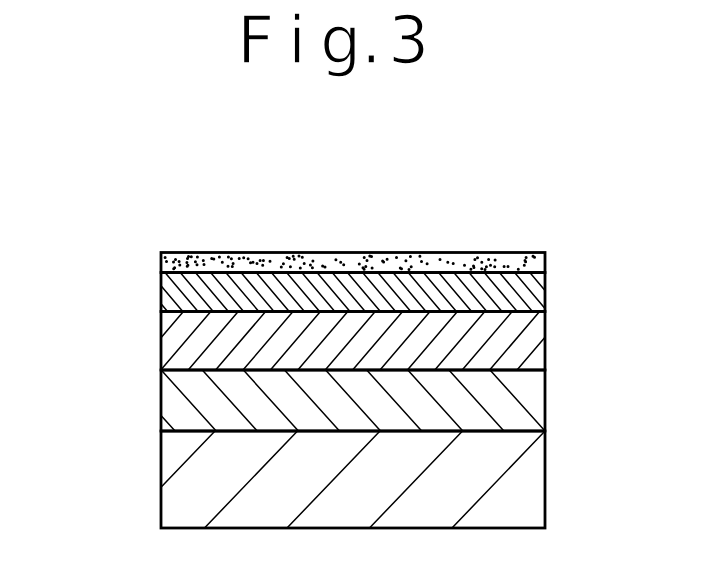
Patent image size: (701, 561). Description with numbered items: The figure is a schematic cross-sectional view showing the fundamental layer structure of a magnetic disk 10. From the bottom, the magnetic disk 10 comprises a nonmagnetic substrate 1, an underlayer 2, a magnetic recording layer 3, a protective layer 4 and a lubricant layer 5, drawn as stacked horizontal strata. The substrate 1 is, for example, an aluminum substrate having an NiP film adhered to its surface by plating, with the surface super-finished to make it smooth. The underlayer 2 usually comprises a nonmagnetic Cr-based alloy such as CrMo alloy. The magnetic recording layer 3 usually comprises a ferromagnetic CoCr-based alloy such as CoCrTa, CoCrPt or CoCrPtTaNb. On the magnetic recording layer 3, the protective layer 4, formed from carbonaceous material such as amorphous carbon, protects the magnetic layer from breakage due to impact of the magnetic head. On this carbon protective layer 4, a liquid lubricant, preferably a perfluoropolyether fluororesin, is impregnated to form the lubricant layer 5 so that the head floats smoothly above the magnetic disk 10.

The magnetic disk 10 is at (139, 255).
The nonmagnetic substrate 1 is at (527, 488).
The underlayer 2 is at (532, 403).
The magnetic recording layer 3 is at (527, 343).
The protective layer 4 is at (537, 290).
The lubricant layer 5 is at (491, 258).